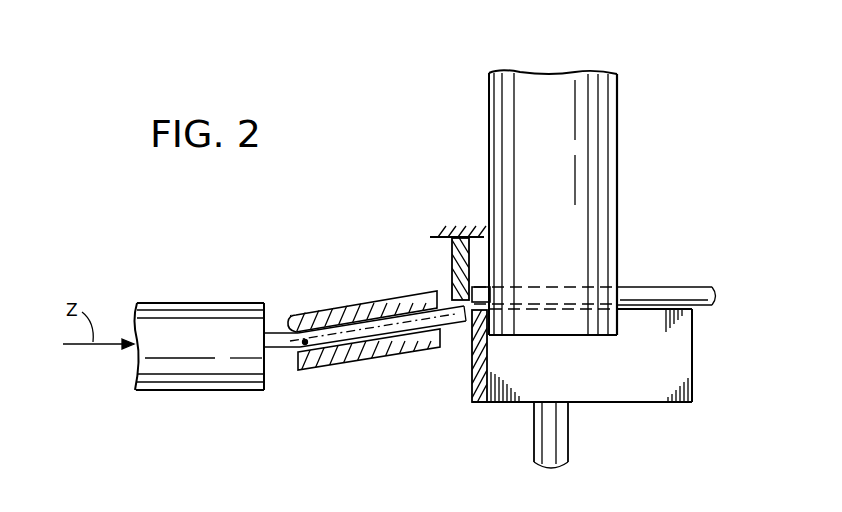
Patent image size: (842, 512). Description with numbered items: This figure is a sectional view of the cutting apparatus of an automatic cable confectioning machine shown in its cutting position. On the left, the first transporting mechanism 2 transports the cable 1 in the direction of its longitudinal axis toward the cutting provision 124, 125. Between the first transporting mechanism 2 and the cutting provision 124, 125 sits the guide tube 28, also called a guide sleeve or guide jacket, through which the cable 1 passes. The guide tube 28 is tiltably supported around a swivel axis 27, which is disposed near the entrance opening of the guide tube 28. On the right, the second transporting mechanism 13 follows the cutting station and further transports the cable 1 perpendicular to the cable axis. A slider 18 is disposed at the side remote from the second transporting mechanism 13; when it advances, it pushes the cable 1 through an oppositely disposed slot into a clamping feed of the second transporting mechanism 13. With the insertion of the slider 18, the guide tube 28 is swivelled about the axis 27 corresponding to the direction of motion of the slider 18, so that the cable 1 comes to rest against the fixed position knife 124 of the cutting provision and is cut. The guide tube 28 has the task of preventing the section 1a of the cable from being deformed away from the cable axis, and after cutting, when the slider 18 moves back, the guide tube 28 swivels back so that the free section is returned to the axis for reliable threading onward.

The first transporting mechanism 2 is at (218, 330).
The cable 1 is at (278, 333).
The swivel axis 27 is at (277, 348).
The guide tube 28 is at (350, 320).
The section of the cable 1a is at (358, 338).
The fixed position knife 124 is at (456, 268).
The cutting provision 125 is at (474, 374).
The second transporting mechanism 13 is at (578, 221).
The slider 18 is at (657, 382).